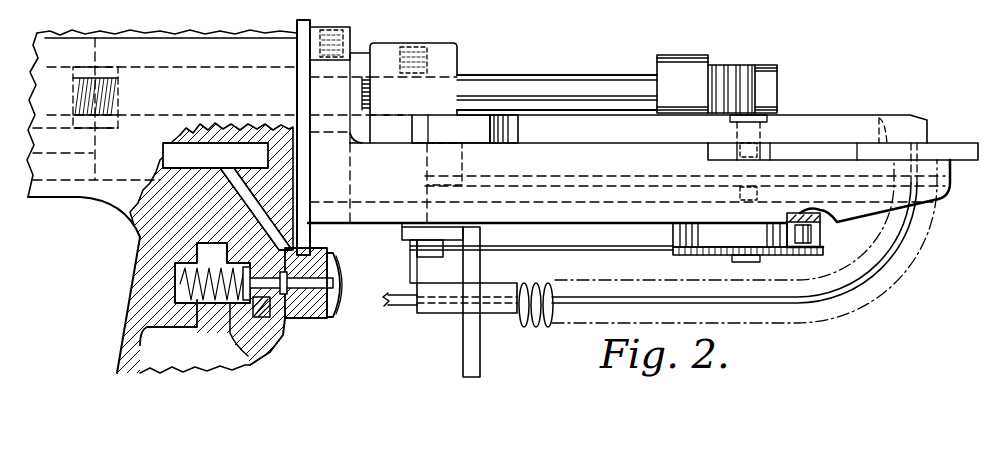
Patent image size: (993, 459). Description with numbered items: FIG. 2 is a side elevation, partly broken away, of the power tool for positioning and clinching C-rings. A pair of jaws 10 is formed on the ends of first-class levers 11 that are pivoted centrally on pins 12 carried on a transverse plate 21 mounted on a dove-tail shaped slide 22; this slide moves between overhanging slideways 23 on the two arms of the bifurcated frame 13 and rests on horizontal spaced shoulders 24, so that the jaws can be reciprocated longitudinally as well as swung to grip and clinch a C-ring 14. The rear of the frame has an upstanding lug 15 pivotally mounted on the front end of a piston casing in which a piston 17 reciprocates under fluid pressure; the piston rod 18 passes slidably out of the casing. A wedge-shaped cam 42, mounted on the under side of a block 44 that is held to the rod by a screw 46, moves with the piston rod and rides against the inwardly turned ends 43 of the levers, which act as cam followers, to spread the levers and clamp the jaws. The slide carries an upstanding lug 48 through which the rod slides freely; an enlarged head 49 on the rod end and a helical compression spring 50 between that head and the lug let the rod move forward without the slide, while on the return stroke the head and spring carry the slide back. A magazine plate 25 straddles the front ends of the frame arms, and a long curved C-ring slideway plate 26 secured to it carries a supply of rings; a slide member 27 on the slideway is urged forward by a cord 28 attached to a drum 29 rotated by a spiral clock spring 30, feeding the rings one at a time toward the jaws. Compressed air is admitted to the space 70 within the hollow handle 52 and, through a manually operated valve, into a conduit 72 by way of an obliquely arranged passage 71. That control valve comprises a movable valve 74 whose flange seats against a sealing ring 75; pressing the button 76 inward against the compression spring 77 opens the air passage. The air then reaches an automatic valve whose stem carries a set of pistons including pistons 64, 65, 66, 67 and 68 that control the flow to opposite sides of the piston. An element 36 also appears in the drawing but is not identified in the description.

The jaws 10 is at (928, 118).
The levers 11 is at (666, 142).
The pins 12 is at (768, 128).
The bifurcated frame 13 is at (393, 186).
The C-ring 14 is at (526, 328).
The upstanding lug 15 is at (338, 28).
The piston 17 is at (95, 167).
The piston rod 18 is at (553, 76).
The transverse plate 21 is at (770, 152).
The slide 22 is at (444, 164).
The slideways 23 is at (600, 197).
The shoulders 24 is at (650, 200).
The magazine plate 25 is at (962, 157).
The C-ring slideway plate 26 is at (867, 282).
The slide member 27 is at (447, 310).
The cord 28 is at (592, 250).
The drum 29 is at (701, 252).
The spiral clock spring 30 is at (822, 233).
The pin 36 is at (887, 118).
The wedge-shaped cam 42 is at (451, 129).
The inwardly turned ends 43 is at (504, 144).
The block 44 is at (452, 57).
The screw 46 is at (425, 43).
The upstanding lug 48 is at (682, 57).
The enlarged head 49 is at (773, 68).
The helical compression spring 50 is at (734, 65).
The hollow handle 52 is at (127, 350).
The piston 64 is at (30, 0).
The piston 65 is at (71, 0).
The piston 66 is at (131, 0).
The piston 67 is at (206, 0).
The piston 68 is at (263, 0).
The space 70 is at (207, 355).
The obliquely arranged passage 71 is at (253, 222).
The conduit 72 is at (233, 143).
The movable valve 74 is at (252, 277).
The sealing ring 75 is at (262, 325).
The button 76 is at (347, 275).
The compression spring 77 is at (216, 266).